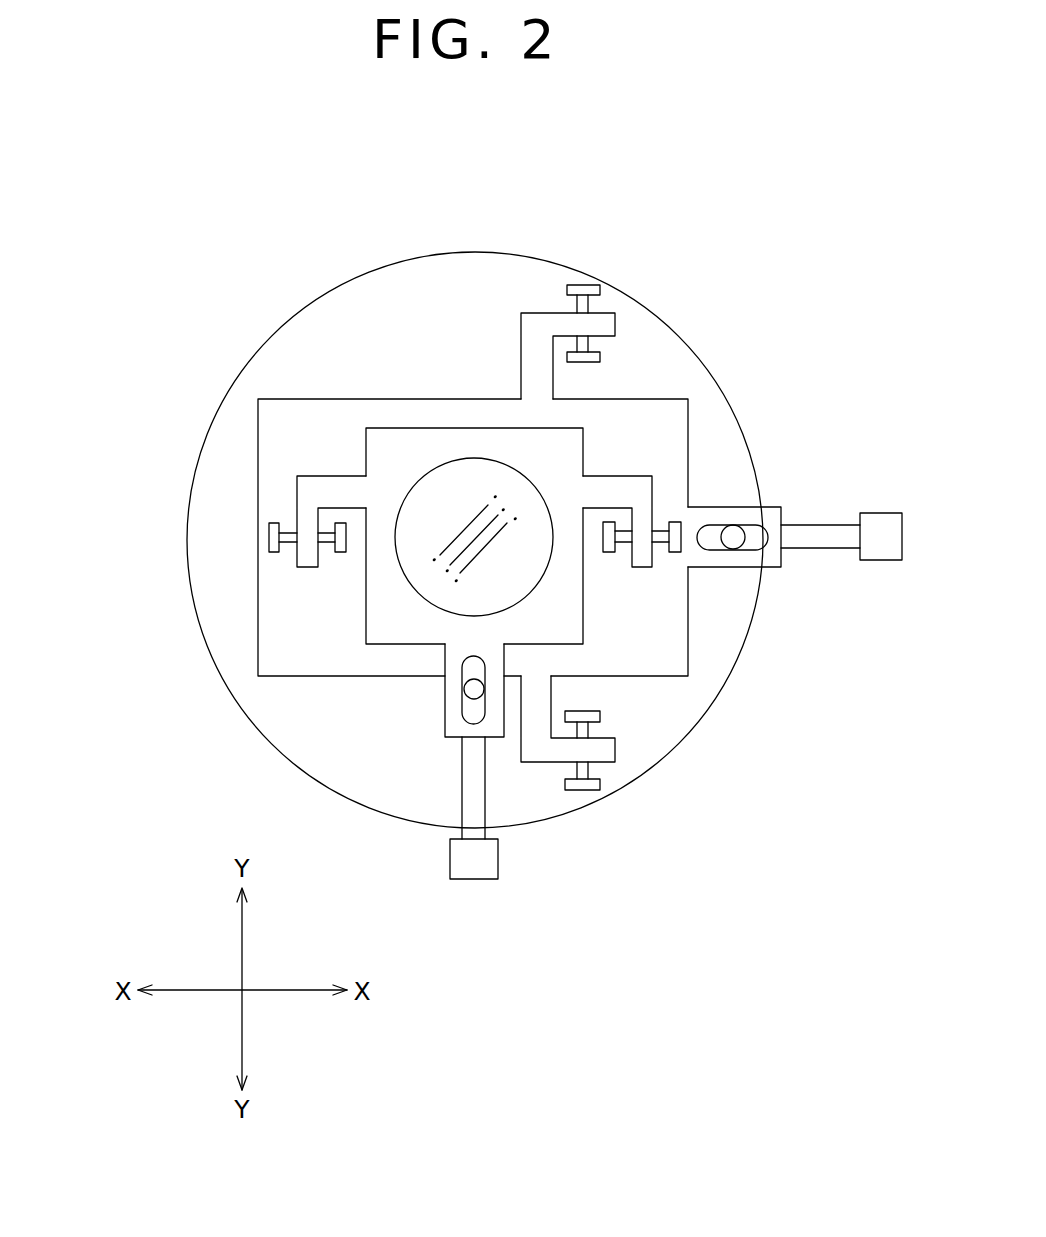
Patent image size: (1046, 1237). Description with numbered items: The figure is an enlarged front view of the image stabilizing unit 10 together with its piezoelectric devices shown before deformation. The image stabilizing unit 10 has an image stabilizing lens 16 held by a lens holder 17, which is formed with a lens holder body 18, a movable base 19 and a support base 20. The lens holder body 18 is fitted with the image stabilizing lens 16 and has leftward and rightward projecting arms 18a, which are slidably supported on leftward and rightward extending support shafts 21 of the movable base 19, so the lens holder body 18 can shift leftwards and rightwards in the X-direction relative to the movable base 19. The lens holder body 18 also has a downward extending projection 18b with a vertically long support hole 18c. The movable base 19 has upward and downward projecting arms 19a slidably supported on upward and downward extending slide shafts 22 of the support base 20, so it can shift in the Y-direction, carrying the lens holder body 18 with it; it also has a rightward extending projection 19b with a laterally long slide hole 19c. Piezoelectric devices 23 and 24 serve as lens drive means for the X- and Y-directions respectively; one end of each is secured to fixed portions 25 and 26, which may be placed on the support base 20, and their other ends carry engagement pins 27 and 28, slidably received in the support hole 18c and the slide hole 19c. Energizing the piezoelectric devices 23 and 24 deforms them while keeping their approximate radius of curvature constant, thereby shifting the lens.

The image stabilizing unit 10 is at (727, 292).
The image stabilizing lens 16 is at (452, 480).
The lens holder 17 is at (80, 535).
The lens holder body 18 is at (378, 630).
The projecting arms 18a is at (305, 508).
The projection 18b is at (455, 724).
The support hole 18c is at (470, 710).
The movable base 19 is at (292, 603).
The projecting arms 19a is at (553, 320).
The projection 19b is at (770, 558).
The slide hole 19c is at (712, 528).
The support base 20 is at (212, 565).
The support shafts 21 is at (290, 527).
The slide shafts 22 is at (587, 301).
The piezoelectric device 23 is at (474, 795).
The piezoelectric device 24 is at (837, 537).
The fixed portion 25 is at (473, 863).
The fixed portion 26 is at (880, 525).
The engagement pin 27 is at (472, 688).
The engagement pin 28 is at (733, 537).